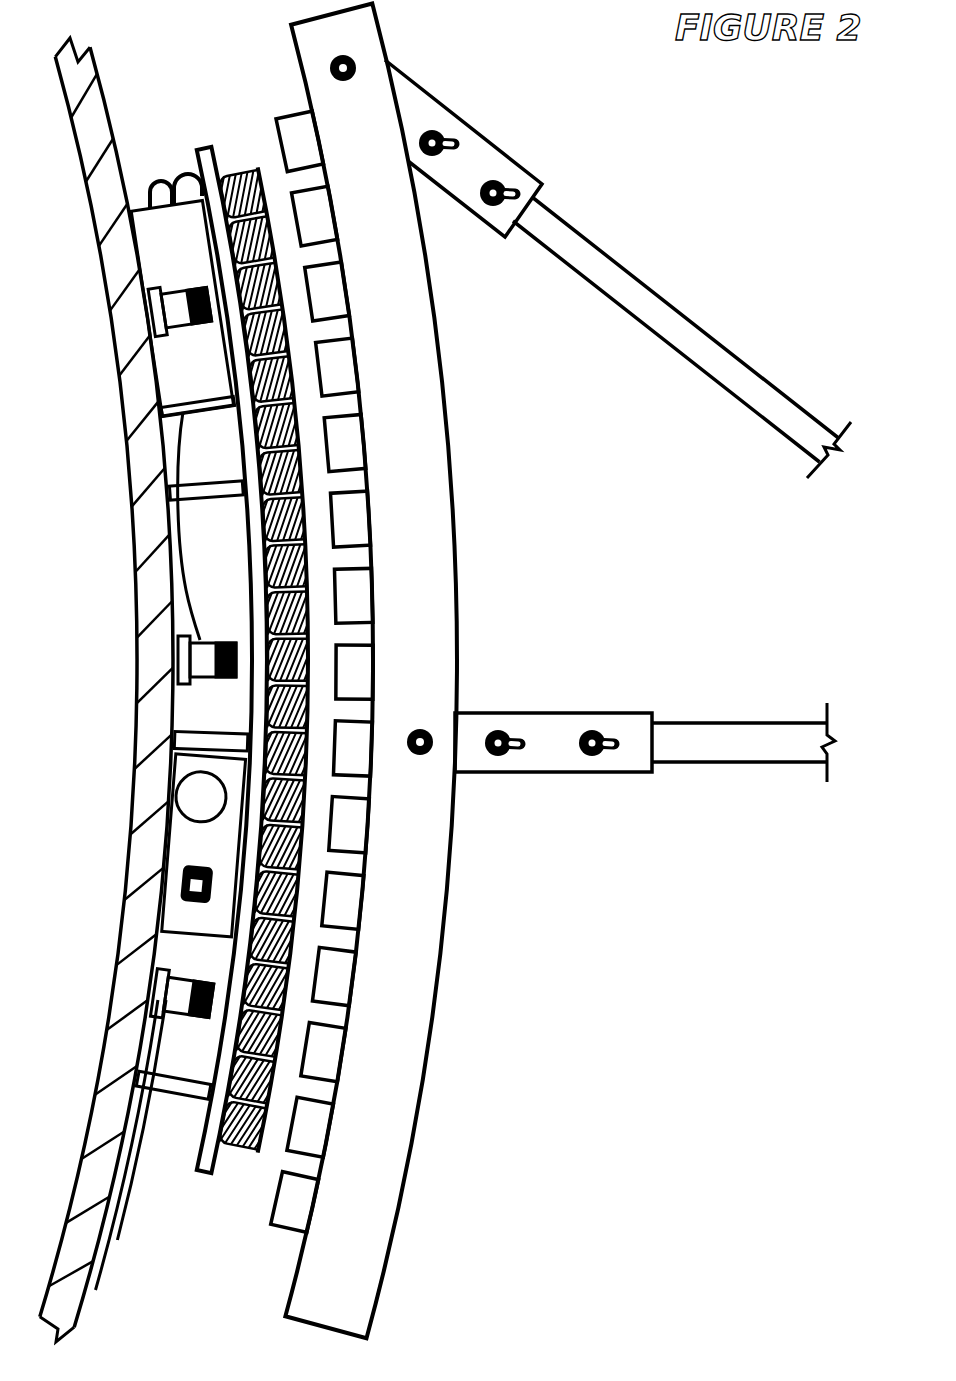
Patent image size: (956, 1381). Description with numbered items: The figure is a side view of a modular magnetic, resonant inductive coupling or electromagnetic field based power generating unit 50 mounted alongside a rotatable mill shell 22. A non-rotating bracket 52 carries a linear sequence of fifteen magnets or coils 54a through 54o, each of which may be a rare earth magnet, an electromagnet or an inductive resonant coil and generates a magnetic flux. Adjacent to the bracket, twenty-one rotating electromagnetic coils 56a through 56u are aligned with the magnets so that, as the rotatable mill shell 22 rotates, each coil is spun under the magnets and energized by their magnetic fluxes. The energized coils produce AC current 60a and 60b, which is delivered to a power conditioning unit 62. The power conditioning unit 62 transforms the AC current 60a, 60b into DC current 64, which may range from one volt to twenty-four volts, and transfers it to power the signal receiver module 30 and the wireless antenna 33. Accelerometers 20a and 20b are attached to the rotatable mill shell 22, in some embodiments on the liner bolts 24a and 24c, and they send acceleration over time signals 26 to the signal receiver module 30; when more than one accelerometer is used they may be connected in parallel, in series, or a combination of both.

The rotatable mill shell 22 is at (106, 100).
The accelerometer 20a is at (130, 1167).
The accelerometer 20b is at (103, 1263).
The liner bolt 24a is at (180, 300).
The liner bolt 24c is at (173, 1017).
The acceleration over time signals 26 is at (148, 1090).
The signal receiver module 30 is at (194, 918).
The wireless antenna 33 is at (203, 808).
The modular power generating unit 50 is at (568, 671).
The non-rotating bracket 52 is at (412, 358).
The magnet or coil 54a is at (280, 146).
The magnet or coil 54o is at (275, 1197).
The rotating electromagnetic coil 56a is at (242, 168).
The rotating electromagnetic coil 56u is at (242, 1150).
The AC current 60a is at (152, 188).
The AC current 60b is at (175, 182).
The power conditioning unit 62 is at (195, 392).
The DC current 64 is at (184, 547).